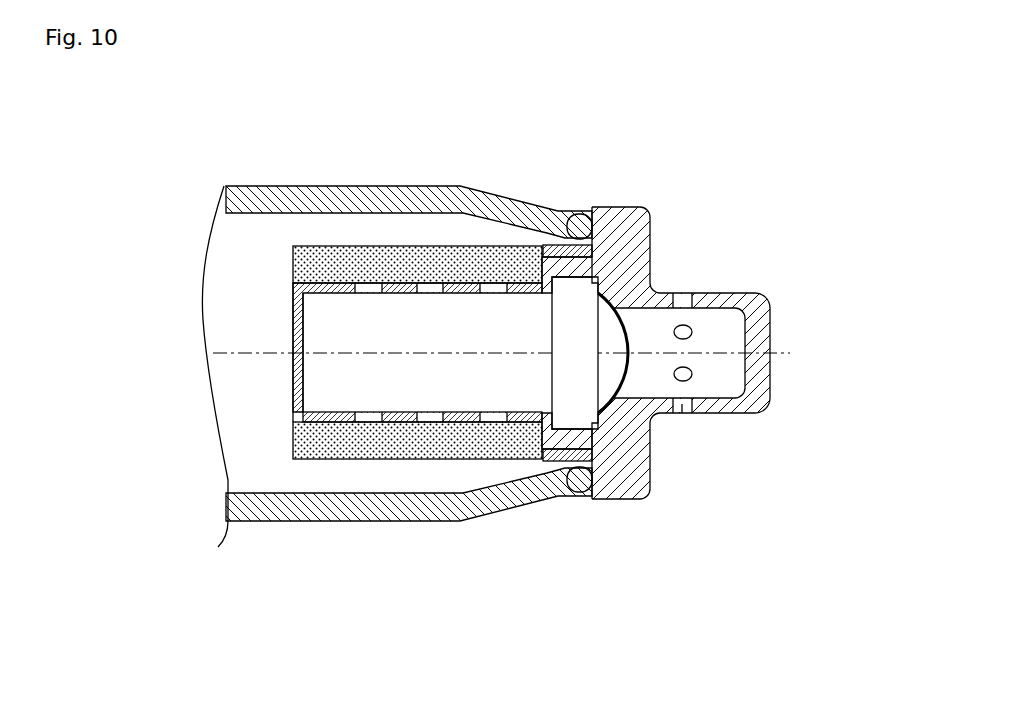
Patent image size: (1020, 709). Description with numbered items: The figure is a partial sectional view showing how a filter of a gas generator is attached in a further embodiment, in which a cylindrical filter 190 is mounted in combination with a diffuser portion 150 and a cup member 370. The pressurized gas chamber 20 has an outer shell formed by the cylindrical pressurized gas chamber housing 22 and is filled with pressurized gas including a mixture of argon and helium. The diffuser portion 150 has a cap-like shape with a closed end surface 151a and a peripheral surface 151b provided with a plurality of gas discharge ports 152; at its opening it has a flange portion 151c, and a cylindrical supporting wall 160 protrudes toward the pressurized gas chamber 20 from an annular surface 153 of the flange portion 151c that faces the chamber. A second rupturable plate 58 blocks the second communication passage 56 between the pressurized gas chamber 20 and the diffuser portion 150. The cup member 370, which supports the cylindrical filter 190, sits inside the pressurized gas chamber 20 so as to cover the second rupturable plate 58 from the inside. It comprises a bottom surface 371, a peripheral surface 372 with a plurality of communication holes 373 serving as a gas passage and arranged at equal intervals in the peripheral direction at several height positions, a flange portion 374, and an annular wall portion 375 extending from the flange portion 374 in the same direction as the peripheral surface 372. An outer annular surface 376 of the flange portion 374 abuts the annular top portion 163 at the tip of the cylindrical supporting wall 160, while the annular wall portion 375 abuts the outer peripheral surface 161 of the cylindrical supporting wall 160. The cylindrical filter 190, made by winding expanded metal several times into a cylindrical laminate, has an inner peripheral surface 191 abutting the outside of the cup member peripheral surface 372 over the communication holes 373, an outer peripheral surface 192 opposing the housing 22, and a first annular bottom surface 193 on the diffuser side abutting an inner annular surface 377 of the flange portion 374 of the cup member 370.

The pressurized gas chamber 20 is at (260, 320).
The pressurized gas chamber housing 22 is at (424, 187).
The second communication passage 56 is at (727, 360).
The second rupturable plate 58 is at (630, 362).
The diffuser portion 150 is at (705, 325).
The closed end surface 151a is at (738, 322).
The peripheral surface 151b is at (724, 414).
The flange portion 151c is at (630, 212).
The gas discharge ports 152 is at (684, 414).
The annular surface 153 is at (582, 248).
The cylindrical supporting wall 160 is at (528, 198).
The outer peripheral surface 161 is at (566, 232).
The annular top portion 163 is at (545, 246).
The cylindrical filter 190 is at (406, 353).
The inner peripheral surface 191 is at (327, 294).
The outer peripheral surface 192 is at (392, 246).
The first annular bottom surface 193 is at (555, 279).
The cup member 370 is at (288, 401).
The bottom surface 371 is at (292, 370).
The peripheral surface 372 is at (408, 424).
The communication holes 373 is at (367, 418).
The flange portion 374 is at (536, 515).
The annular wall portion 375 is at (578, 462).
The outer annular surface 376 is at (566, 470).
The inner annular surface 377 is at (543, 440).